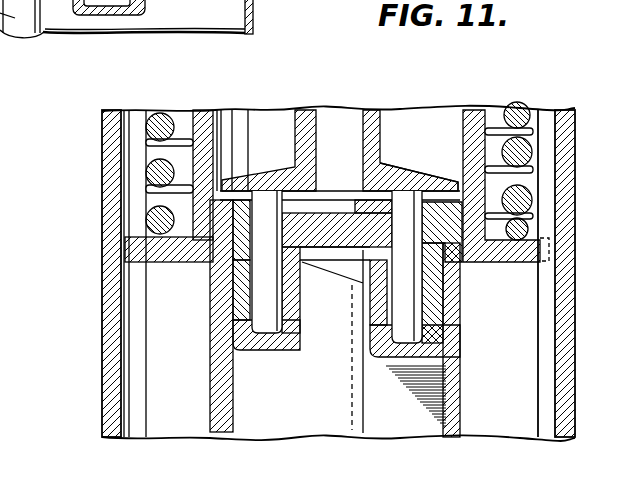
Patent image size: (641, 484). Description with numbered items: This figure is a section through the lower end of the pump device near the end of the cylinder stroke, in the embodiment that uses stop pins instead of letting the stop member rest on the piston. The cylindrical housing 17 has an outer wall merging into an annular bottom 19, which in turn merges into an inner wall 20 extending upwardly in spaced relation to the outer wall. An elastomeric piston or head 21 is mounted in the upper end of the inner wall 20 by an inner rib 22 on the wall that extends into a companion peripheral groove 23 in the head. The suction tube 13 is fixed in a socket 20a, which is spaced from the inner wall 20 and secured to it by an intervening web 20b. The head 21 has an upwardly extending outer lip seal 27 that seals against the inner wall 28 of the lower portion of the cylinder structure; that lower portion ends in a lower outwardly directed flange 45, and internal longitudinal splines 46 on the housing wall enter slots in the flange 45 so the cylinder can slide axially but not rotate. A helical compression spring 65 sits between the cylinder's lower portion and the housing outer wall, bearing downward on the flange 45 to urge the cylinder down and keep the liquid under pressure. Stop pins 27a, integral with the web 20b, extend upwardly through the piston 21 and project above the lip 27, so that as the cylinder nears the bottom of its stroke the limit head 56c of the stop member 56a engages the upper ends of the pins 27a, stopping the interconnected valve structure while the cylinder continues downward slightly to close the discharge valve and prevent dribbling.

The suction tube 13 is at (310, 410).
The cylindrical housing 17 is at (98, 361).
The annular bottom 19 is at (102, 3).
The inner wall 20 is at (447, 412).
The socket 20a is at (378, 303).
The intervening web 20b is at (247, 355).
The elastomeric piston or head 21 is at (294, 196).
The inner rib 22 is at (220, 272).
The peripheral groove 23 is at (230, 280).
The outer lip seal 27 is at (455, 205).
The stop pins 27a is at (262, 295).
The inner wall of the piston structure 28 is at (200, 167).
The lower outwardly directed flange 45 is at (122, 242).
The internal longitudinal splines 46 is at (137, 400).
The stop member 56a is at (373, 117).
The limit head 56c is at (410, 180).
The helical compression spring 65 is at (157, 125).